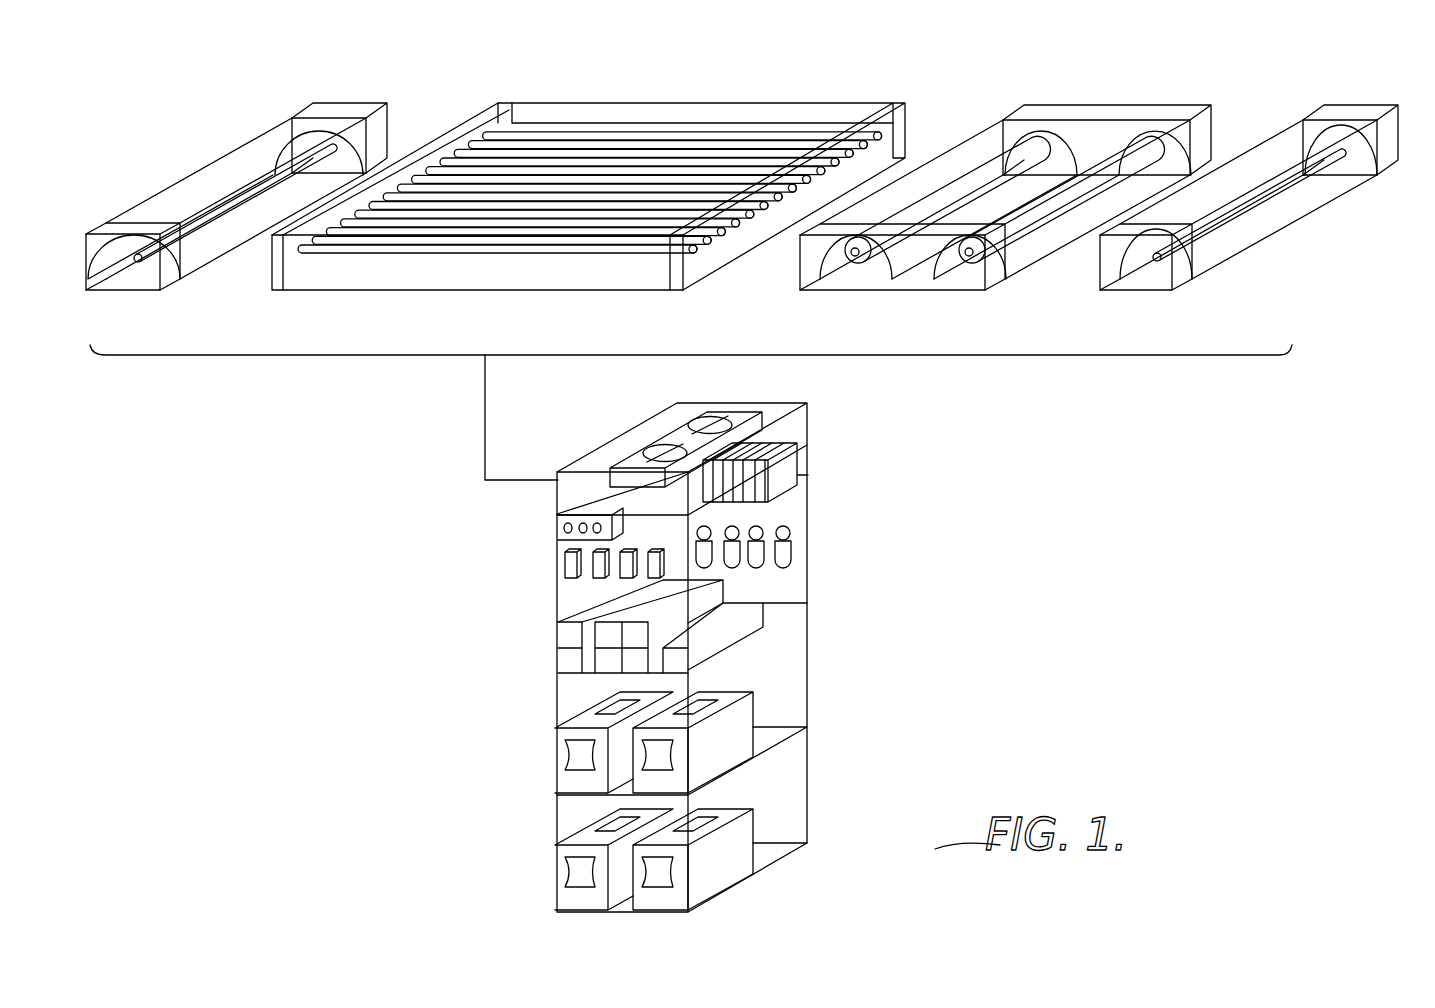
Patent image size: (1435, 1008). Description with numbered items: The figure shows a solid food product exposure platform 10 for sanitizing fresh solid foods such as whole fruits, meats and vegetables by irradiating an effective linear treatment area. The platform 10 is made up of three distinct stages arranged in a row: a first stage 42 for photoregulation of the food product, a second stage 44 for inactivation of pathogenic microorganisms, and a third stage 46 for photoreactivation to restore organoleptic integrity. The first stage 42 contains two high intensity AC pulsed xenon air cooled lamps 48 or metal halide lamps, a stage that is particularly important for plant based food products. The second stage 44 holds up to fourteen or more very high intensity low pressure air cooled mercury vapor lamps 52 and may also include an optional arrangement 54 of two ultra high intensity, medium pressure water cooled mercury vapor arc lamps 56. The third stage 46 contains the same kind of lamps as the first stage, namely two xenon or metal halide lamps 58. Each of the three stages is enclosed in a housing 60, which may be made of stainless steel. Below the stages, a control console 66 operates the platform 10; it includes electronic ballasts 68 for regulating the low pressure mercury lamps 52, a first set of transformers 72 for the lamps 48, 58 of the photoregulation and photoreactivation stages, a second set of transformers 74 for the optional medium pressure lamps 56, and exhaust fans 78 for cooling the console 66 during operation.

The solid food product exposure platform 10 is at (368, 446).
The first stage 42 is at (347, 96).
The second stage 44 is at (722, 97).
The third stage 46 is at (1297, 115).
The lamps 48 is at (206, 232).
The mercury vapor lamps 52 is at (488, 225).
The arrangement of lamps 54 is at (985, 115).
The mercury vapor arc lamps 56 is at (1010, 258).
The lamps 58 is at (1163, 270).
The housings 60 is at (174, 188).
The control console 66 is at (548, 750).
The electronic ballasts 68 is at (718, 596).
The transformers 72 is at (748, 716).
The transformers 74 is at (748, 833).
The exhaust fans 78 is at (693, 425).